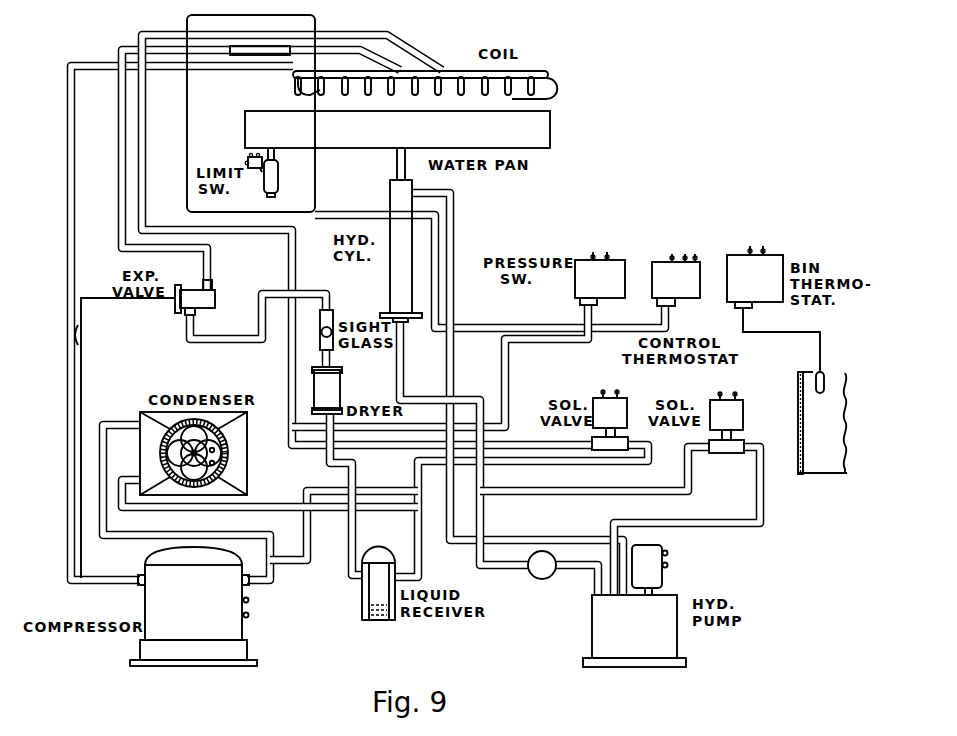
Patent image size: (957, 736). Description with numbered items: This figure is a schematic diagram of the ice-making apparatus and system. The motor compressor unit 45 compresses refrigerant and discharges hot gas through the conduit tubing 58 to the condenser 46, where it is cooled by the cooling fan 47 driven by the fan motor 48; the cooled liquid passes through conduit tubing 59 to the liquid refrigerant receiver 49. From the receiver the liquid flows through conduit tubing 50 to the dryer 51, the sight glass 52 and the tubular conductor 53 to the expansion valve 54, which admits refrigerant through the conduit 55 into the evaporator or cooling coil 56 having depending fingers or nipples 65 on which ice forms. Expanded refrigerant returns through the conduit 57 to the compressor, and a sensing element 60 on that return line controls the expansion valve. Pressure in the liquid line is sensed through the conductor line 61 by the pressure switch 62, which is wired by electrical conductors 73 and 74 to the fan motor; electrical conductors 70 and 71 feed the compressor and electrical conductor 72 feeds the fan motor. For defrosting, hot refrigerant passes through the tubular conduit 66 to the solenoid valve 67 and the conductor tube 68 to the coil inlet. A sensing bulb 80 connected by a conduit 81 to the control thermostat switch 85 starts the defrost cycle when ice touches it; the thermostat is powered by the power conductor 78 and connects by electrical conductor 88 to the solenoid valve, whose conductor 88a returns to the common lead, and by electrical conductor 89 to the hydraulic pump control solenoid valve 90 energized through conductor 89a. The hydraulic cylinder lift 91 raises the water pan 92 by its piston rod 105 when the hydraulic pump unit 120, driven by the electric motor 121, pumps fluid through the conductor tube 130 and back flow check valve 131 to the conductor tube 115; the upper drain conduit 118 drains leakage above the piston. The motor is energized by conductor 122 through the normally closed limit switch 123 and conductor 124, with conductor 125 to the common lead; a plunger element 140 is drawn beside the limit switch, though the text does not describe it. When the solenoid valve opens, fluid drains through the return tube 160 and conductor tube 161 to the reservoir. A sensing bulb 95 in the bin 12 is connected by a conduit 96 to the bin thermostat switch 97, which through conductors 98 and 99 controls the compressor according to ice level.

The bin 12 is at (837, 472).
The motor compressor unit 45 is at (193, 606).
The condenser 46 is at (352, 360).
The cooling fan 47 is at (172, 442).
The fan motor 48 is at (208, 446).
The liquid refrigerant receiver 49 is at (362, 612).
The conduit tubing 50 is at (350, 463).
The dryer 51 is at (342, 384).
The sight glass 52 is at (334, 313).
The tubular conductor 53 is at (242, 332).
The expansion valve 54 is at (216, 298).
The conduit 55 is at (117, 132).
The evaporator or cooling coil 56 is at (548, 73).
The conduit 57 is at (68, 130).
The conduit tubing 58 is at (280, 532).
The conduit tubing 59 is at (282, 505).
The sensing element 60 is at (80, 335).
The conductor line 61 is at (507, 380).
The pressure switch 62 is at (610, 266).
The depending fingers or nipples 65 is at (548, 97).
The tubular conduit 66 is at (526, 461).
The solenoid valve 67 is at (612, 450).
The conductor tube 68 is at (146, 146).
The electrical conductor 70 is at (250, 600).
The electrical conductor 71 is at (250, 615).
The electrical conductor 72 is at (215, 450).
The electrical conductor 73 is at (215, 463).
The electrical conductor 74 is at (607, 252).
The power conductor 78 is at (685, 252).
The sensing bulb 80 is at (300, 94).
The conduit 81 is at (374, 215).
The control thermostat switch 85 is at (690, 270).
The electrical conductor 88 is at (672, 252).
The conductor 88a is at (619, 392).
The electrical conductor 89 is at (695, 252).
The conductor 89a is at (737, 394).
The hydraulic pump control solenoid valve 90 is at (745, 436).
The hydraulic cylinder lift 91 is at (388, 273).
The water pan 92 is at (552, 132).
The sensing bulb 95 is at (825, 376).
The conduit 96 is at (818, 332).
The bin thermostat switch 97 is at (770, 262).
The conductor 98 is at (763, 246).
The conductor 99 is at (750, 246).
The piston rod 105 is at (396, 162).
The conductor tube 115 is at (401, 362).
The upper drain conduit 118 is at (524, 538).
The hydraulic pump unit 120 is at (634, 631).
The electric motor 121 is at (662, 578).
The conductor 122 is at (248, 156).
The limit switch 123 is at (260, 170).
The conductor 124 is at (245, 163).
The conductor 125 is at (668, 565).
The conductor tube 130 is at (572, 575).
The back flow check valve 131 is at (534, 576).
The limit switch plunger 140 is at (279, 185).
The drain or return tube 160 is at (538, 489).
The conductor tube 161 is at (654, 520).